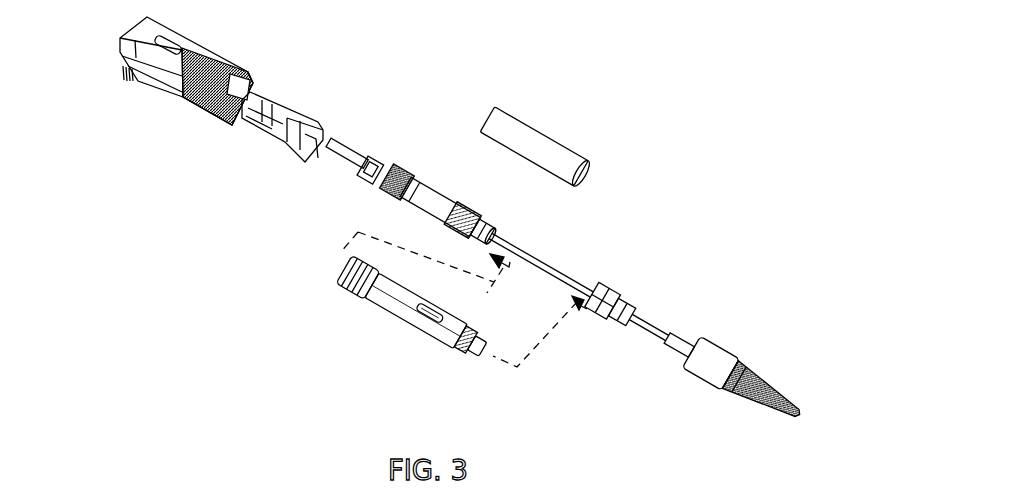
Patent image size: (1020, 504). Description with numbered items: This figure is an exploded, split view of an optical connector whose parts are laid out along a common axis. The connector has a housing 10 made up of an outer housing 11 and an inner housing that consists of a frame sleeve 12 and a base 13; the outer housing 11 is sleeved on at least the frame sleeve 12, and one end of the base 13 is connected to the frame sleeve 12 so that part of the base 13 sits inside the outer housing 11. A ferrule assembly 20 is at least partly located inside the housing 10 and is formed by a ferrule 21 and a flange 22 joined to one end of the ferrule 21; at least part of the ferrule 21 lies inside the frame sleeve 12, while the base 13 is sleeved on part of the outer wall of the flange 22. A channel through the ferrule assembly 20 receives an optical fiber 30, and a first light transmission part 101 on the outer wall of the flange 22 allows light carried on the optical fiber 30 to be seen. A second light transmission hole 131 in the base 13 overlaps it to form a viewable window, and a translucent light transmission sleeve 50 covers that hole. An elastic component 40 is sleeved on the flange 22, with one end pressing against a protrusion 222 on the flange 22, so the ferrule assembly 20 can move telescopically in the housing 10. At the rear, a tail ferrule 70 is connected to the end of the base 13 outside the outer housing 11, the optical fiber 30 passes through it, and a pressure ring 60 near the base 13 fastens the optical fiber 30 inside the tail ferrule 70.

The housing 10 is at (236, 277).
The outer housing 11 is at (170, 93).
The frame sleeve 12 is at (273, 137).
The base 13 is at (339, 306).
The second light transmission hole 131 is at (430, 313).
The ferrule assembly 20 is at (443, 122).
The ferrule 21 is at (347, 155).
The flange 22 is at (417, 188).
The protrusion 222 is at (367, 183).
The elastic component 40 is at (403, 202).
The first light transmission part 101 is at (470, 212).
The optical fiber 30 is at (530, 261).
The light transmission sleeve 50 is at (558, 148).
The pressure ring 60 is at (613, 297).
The tail ferrule 70 is at (730, 358).